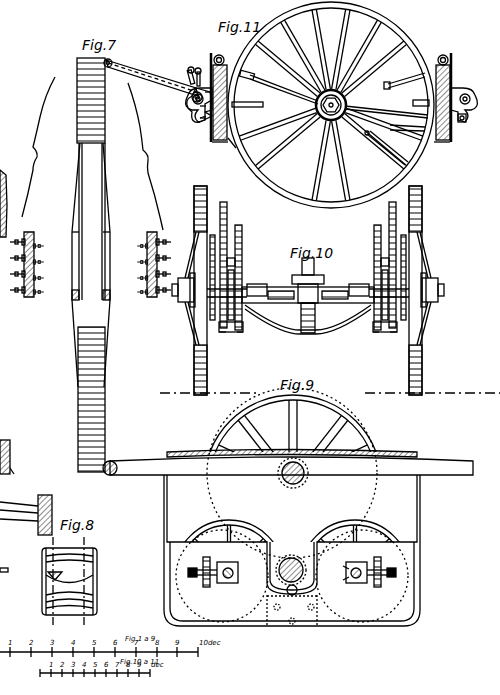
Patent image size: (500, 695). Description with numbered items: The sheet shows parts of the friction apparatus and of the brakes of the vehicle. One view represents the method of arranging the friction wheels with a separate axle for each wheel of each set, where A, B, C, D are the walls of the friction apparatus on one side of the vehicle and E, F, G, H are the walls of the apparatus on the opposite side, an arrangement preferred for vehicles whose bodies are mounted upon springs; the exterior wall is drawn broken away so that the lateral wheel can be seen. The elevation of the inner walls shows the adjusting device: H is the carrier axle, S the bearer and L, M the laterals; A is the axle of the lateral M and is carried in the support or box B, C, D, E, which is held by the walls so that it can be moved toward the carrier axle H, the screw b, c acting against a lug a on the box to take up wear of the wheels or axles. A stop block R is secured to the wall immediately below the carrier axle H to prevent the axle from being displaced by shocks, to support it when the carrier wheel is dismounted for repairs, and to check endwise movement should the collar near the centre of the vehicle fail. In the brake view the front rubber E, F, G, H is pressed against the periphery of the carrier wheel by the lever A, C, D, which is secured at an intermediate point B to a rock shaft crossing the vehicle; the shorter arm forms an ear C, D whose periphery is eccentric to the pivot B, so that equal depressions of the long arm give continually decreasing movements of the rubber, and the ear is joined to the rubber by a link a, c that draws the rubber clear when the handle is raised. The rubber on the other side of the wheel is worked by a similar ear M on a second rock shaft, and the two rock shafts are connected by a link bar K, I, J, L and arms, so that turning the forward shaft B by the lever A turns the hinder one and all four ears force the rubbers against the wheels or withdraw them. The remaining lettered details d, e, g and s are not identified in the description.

In FIG. 11, the axle of lateral wheel A is at (219, 102).
In FIG. 9, the axle of lateral wheel A is at (367, 572).
In FIG. 7, the axle box support B is at (192, 86).
In FIG. 11, the axle box support B is at (196, 90).
In FIG. 10, the axle box support B is at (220, 337).
In FIG. 9, the axle box support B is at (371, 572).
In FIG. 11, the axle box support C is at (207, 88).
In FIG. 10, the axle box support C is at (227, 267).
In FIG. 9, the axle box support C is at (371, 572).
In FIG. 7, the axle box support D is at (200, 123).
In FIG. 11, the axle box support D is at (201, 124).
In FIG. 10, the axle box support D is at (239, 337).
In FIG. 9, the axle box support D is at (291, 570).
In FIG. 11, the wall of friction apparatus E is at (205, 93).
In FIG. 10, the wall of friction apparatus E is at (389, 267).
In FIG. 9, the wall of friction apparatus E is at (371, 576).
In FIG. 11, the wall of friction apparatus F is at (215, 148).
In FIG. 10, the wall of friction apparatus F is at (374, 337).
In FIG. 11, the wall of friction apparatus G is at (224, 61).
In FIG. 10, the wall of friction apparatus G is at (389, 267).
In FIG. 11, the carrier axle H is at (231, 146).
In FIG. 10, the carrier axle H is at (394, 337).
In FIG. 11, the link bar I is at (275, 88).
In FIG. 11, the link bar J is at (387, 119).
In FIG. 7, the link bar K is at (186, 71).
In FIG. 11, the link bar K is at (195, 74).
In FIG. 8, the link bar K is at (26, 515).
In FIG. 11, the lateral wheel L is at (465, 122).
In FIG. 9, the lateral wheel L is at (229, 572).
In FIG. 11, the lateral wheel M is at (464, 105).
In FIG. 9, the lateral wheel M is at (355, 572).
In FIG. 10, the stop block R is at (227, 267).
In FIG. 9, the stop block R is at (292, 590).
In FIG. 8, the stop block R is at (8, 540).
In FIG. 9, the bearer S is at (293, 483).
In FIG. 7, the lug on axle box a is at (202, 107).
In FIG. 8, the lug on axle box a is at (58, 577).
In FIG. 8, the adjusting screw b is at (58, 577).
In FIG. 8, the adjusting screw c is at (58, 571).
In FIG. 9, the pin d is at (342, 565).
In FIG. 8, the pin d is at (59, 571).
In FIG. 9, the pin e is at (360, 573).
In FIG. 8, the bracket g is at (10, 457).
In FIG. 8, the screw s is at (13, 477).